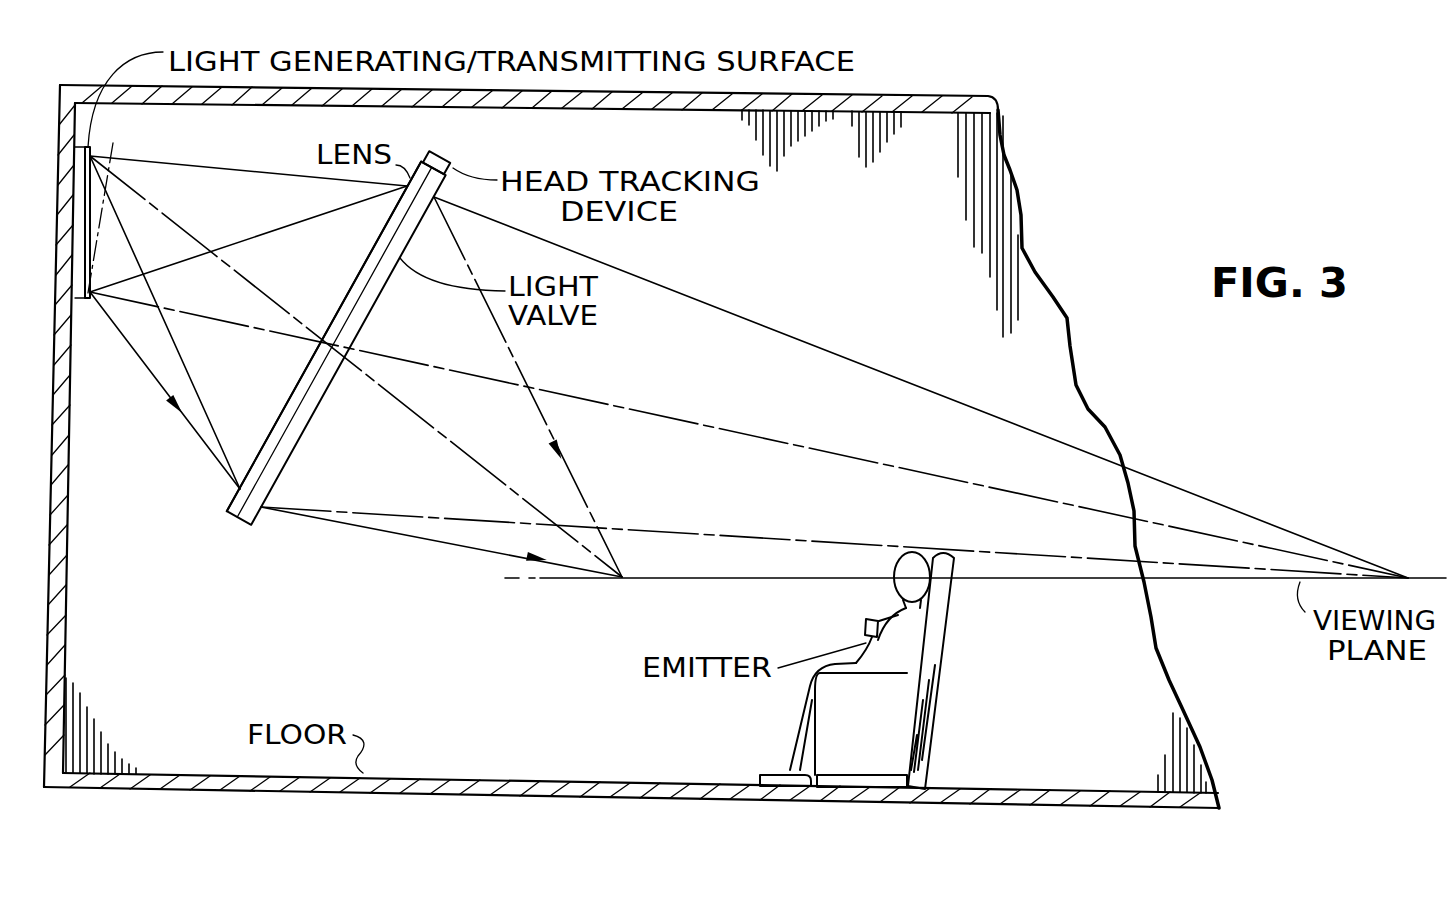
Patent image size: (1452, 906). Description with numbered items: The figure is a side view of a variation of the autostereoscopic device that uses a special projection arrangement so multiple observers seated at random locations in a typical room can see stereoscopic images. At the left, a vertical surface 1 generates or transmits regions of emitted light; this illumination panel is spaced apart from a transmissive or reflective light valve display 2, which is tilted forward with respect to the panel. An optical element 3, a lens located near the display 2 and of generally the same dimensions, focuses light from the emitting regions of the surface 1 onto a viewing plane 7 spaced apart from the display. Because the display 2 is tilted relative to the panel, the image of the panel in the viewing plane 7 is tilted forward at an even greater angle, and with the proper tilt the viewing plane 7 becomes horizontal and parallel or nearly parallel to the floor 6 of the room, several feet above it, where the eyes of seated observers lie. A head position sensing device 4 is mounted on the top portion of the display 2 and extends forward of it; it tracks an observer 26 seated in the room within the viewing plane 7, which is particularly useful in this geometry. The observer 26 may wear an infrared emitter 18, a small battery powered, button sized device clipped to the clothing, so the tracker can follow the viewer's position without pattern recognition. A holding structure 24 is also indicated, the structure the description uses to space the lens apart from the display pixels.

The surface 1 is at (82, 300).
The light valve display 2 is at (383, 289).
The optical element 3 is at (354, 282).
The head position sensing device 4 is at (450, 158).
The floor 6 is at (1066, 787).
The viewing plane 7 is at (1243, 582).
The infrared emitter 18 is at (865, 626).
The holding structure 24 is at (113, 143).
The observer 26 is at (806, 718).